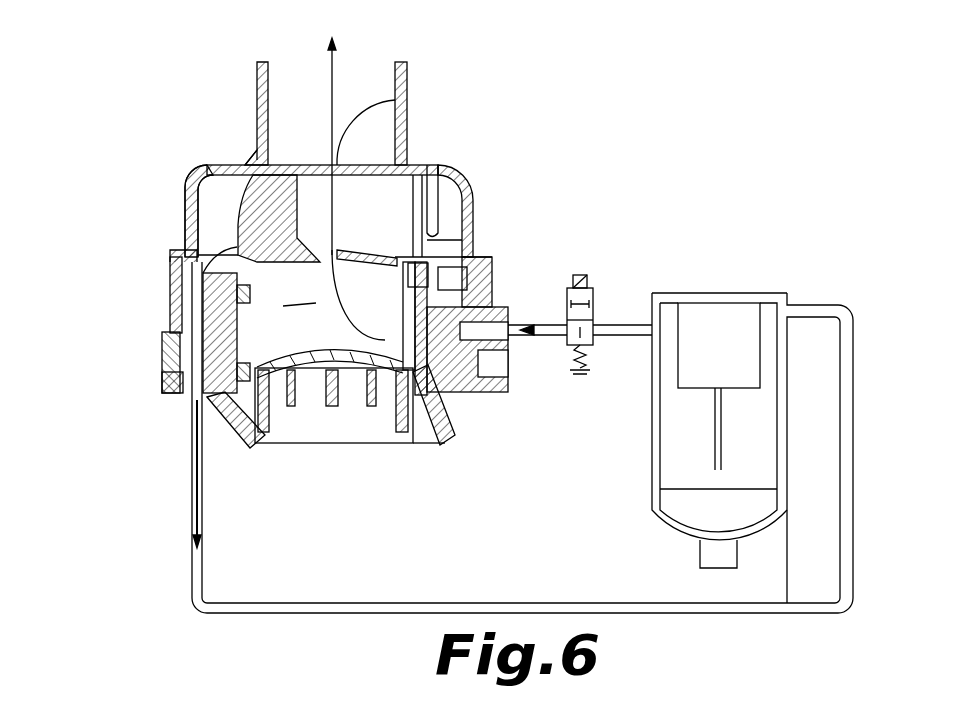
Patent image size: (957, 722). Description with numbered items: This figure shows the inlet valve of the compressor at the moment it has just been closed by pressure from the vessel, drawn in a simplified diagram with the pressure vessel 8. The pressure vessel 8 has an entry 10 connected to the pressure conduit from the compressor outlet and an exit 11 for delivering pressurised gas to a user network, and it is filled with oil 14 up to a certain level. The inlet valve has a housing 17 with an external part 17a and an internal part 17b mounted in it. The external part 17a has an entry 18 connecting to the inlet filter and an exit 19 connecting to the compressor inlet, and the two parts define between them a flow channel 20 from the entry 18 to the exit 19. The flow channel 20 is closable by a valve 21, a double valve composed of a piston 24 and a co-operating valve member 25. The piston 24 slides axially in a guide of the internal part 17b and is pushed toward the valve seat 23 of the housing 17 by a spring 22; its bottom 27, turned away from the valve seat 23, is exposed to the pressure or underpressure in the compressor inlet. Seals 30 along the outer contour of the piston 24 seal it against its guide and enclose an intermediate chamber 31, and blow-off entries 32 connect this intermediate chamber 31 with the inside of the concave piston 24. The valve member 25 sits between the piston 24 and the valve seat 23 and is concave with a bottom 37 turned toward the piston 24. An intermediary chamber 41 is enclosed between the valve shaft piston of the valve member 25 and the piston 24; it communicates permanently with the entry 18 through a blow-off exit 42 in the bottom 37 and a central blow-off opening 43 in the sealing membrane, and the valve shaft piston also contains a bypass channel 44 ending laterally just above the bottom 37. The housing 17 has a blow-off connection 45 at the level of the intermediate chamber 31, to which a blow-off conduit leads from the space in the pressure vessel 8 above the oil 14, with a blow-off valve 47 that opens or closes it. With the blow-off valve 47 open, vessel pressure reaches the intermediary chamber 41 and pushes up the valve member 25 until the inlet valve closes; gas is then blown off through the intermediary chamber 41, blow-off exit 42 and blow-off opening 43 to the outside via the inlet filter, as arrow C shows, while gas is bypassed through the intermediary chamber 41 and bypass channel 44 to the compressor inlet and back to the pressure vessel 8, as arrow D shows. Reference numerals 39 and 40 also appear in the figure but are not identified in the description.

The pressure vessel 8 is at (770, 515).
The entry 10 is at (790, 305).
The exit 11 is at (722, 303).
The oil 14 is at (705, 505).
The housing 17 is at (152, 148).
The external part 17a is at (185, 212).
The internal part 17b is at (222, 422).
The entry 18 is at (408, 100).
The exit 19 is at (195, 393).
The flow channel 20 is at (245, 325).
The valve 21 is at (441, 201).
The spring 22 is at (265, 442).
The valve seat 23 is at (238, 165).
The piston 24 is at (180, 340).
The valve member 25 is at (252, 168).
The bottom 27 is at (310, 335).
The seal 30 is at (240, 298).
The intermediate chamber 31 is at (495, 278).
The blow-off entry 32 is at (415, 385).
The bottom 37 is at (408, 170).
The cup 39 is at (425, 178).
The inner housing surface 40 is at (473, 238).
The intermediary chamber 41 is at (330, 329).
The blow-off exit 42 is at (332, 243).
The blow-off opening 43 is at (382, 108).
The bypass channel 44 is at (492, 257).
The blow-off connection 45 is at (475, 337).
The blow-off valve 47 is at (598, 322).